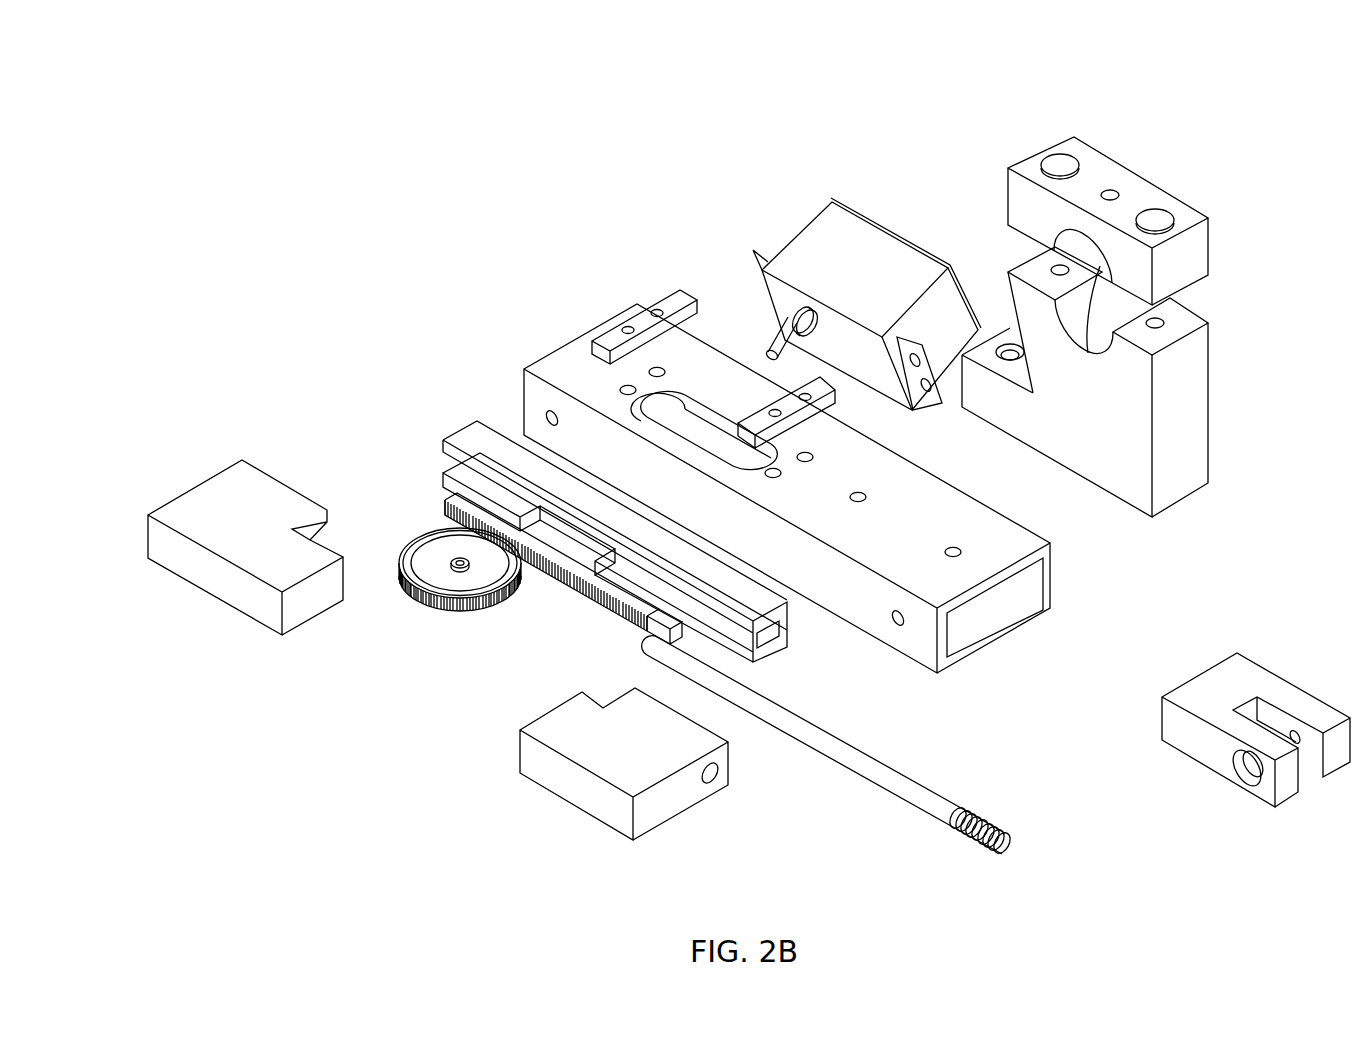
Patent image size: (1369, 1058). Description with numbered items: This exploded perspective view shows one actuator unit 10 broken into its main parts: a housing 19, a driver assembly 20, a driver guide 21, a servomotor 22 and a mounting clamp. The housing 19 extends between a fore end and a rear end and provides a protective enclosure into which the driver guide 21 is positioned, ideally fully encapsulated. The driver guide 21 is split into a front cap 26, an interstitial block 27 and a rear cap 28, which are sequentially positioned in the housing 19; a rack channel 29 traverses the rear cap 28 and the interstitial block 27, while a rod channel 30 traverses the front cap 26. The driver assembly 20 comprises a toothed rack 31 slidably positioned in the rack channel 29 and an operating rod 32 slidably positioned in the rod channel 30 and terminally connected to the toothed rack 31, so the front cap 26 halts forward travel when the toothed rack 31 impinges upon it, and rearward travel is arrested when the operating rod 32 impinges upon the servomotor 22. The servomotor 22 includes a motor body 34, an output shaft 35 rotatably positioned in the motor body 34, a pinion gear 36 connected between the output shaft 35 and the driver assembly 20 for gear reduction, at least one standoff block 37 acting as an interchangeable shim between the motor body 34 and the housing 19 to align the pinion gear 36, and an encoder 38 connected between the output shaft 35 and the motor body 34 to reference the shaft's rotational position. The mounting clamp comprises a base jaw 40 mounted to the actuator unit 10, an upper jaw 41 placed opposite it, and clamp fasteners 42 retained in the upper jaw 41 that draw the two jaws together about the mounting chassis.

The actuator unit 10 is at (684, 205).
The housing 19 is at (1048, 552).
The driver assembly 20 is at (711, 647).
The driver guide 21 is at (484, 592).
The servomotor 22 is at (884, 206).
The front cap 26 is at (548, 764).
The interstitial block 27 is at (475, 437).
The rear cap 28 is at (243, 490).
The rack channel 29 is at (786, 626).
The rod channel 30 is at (730, 773).
The toothed rack 31 is at (447, 506).
The operating rod 32 is at (924, 798).
The motor body 34 is at (832, 210).
The output shaft 35 is at (797, 330).
The pinion gear 36 is at (408, 596).
The standoff block 37 is at (663, 298).
The encoder 38 is at (797, 318).
The base jaw 40 is at (1203, 340).
The upper jaw 41 is at (1197, 262).
The clamp fastener 42 is at (1062, 158).